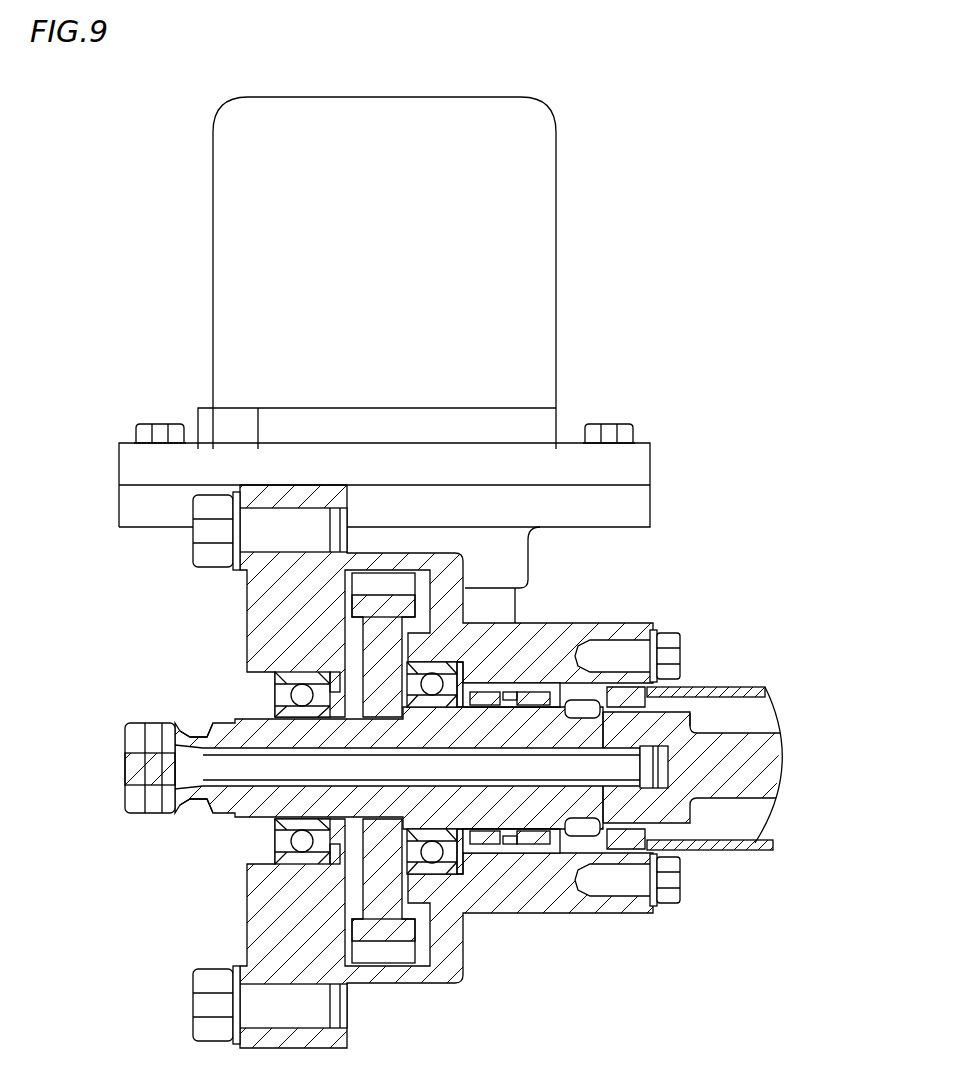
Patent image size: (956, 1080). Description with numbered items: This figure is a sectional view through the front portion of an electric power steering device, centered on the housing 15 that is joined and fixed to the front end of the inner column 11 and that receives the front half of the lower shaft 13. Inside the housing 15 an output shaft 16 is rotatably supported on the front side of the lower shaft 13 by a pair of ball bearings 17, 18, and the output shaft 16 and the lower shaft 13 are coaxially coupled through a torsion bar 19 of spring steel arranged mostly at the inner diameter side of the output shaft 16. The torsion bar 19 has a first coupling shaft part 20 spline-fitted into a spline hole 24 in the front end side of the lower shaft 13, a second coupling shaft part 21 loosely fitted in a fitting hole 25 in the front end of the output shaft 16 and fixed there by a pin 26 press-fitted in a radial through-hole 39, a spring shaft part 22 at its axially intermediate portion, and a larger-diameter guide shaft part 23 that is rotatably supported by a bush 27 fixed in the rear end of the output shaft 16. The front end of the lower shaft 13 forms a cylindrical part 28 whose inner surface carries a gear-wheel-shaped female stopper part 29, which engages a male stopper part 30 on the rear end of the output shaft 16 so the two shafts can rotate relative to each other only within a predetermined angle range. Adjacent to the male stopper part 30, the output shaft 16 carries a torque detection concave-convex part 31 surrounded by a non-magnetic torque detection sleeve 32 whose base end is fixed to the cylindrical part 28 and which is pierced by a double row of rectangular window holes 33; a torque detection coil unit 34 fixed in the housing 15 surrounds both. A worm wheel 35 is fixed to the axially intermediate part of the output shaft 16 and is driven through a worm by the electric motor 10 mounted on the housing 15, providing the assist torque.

The electric motor 10 is at (506, 236).
The inner column 11 is at (725, 686).
The lower shaft 13 is at (733, 775).
The housing 15 is at (275, 950).
The output shaft 16 is at (223, 747).
The ball bearing 17 is at (297, 690).
The ball bearing 18 is at (441, 675).
The torsion bar 19 is at (190, 808).
The first coupling shaft part 20 is at (643, 770).
The second coupling shaft part 21 is at (142, 753).
The spring shaft part 22 is at (243, 770).
The guide shaft part 23 is at (540, 860).
The spline hole 24 is at (720, 735).
The fitting hole 25 is at (133, 783).
The pin 26 is at (152, 803).
The bush 27 is at (600, 853).
The cylindrical part 28 is at (657, 640).
The female stopper part 29 is at (597, 702).
The male stopper part 30 is at (660, 900).
The torque detection concave-convex part 31 is at (505, 688).
The torque detection sleeve 32 is at (578, 702).
The window holes 33 is at (475, 856).
The torque detection coil unit 34 is at (505, 850).
The worm wheel 35 is at (393, 933).
The through-hole 39 is at (147, 742).